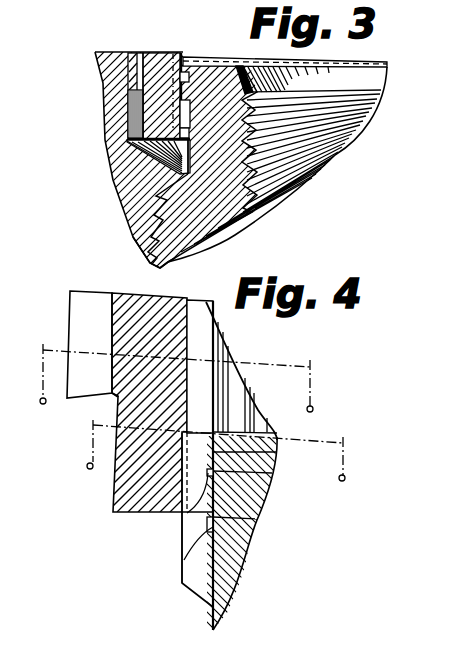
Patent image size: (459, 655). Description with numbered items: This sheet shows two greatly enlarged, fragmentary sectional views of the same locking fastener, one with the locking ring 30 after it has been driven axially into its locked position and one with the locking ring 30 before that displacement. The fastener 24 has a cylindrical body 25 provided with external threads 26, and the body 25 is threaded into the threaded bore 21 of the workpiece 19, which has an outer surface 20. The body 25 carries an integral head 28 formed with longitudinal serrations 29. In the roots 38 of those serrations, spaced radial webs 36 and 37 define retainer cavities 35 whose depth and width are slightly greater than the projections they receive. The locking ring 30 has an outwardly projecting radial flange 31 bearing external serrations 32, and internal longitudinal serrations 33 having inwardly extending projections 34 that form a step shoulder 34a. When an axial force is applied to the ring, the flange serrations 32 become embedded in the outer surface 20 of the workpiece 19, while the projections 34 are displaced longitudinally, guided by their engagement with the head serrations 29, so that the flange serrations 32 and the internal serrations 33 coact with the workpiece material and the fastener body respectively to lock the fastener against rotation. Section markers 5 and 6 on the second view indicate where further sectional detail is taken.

In FIG. 3, the workpiece 19 is at (100, 62).
In FIG. 3, the outer surface 20 is at (113, 52).
In FIG. 3, the threaded bore 21 is at (150, 255).
In FIG. 3, the fastener 24 is at (361, 143).
In FIG. 4, the fastener 24 is at (250, 587).
In FIG. 3, the cylindrical body 25 is at (232, 207).
In FIG. 3, the external threads 26 is at (170, 260).
In FIG. 3, the head 28 is at (228, 66).
In FIG. 4, the head 28 is at (208, 300).
In FIG. 3, the longitudinal serrations 29 is at (128, 126).
In FIG. 4, the longitudinal serrations 29 is at (198, 582).
In FIG. 3, the locking ring 30 is at (163, 56).
In FIG. 4, the locking ring 30 is at (140, 302).
In FIG. 4, the radial flange 31 is at (117, 396).
In FIG. 3, the external serrations 32 is at (137, 54).
In FIG. 4, the external serrations 32 is at (80, 315).
In FIG. 3, the internal longitudinal serrations 33 is at (183, 60).
In FIG. 4, the internal longitudinal serrations 33 is at (205, 313).
In FIG. 3, the projections 34 is at (130, 140).
In FIG. 4, the projections 34 is at (182, 516).
In FIG. 4, the step shoulder 34a is at (182, 517).
In FIG. 3, the retainer cavities 35 is at (128, 88).
In FIG. 4, the retainer cavities 35 is at (213, 472).
In FIG. 3, the radial web 36 is at (128, 80).
In FIG. 4, the radial web 36 is at (213, 455).
In FIG. 3, the radial web 37 is at (128, 105).
In FIG. 4, the radial web 37 is at (212, 520).
In FIG. 3, the serration roots 38 is at (128, 72).
In FIG. 4, the section line 5- 5 is at (174, 388).
In FIG. 4, the section line 6- 6 is at (217, 460).